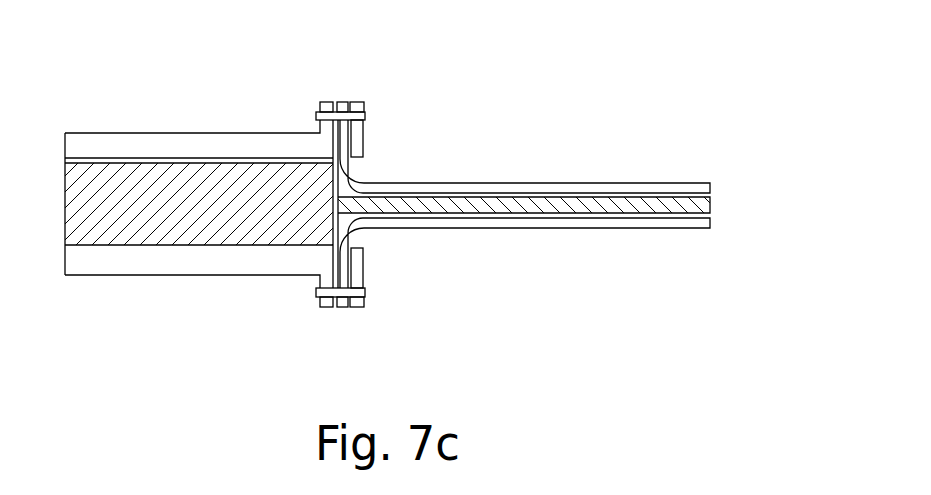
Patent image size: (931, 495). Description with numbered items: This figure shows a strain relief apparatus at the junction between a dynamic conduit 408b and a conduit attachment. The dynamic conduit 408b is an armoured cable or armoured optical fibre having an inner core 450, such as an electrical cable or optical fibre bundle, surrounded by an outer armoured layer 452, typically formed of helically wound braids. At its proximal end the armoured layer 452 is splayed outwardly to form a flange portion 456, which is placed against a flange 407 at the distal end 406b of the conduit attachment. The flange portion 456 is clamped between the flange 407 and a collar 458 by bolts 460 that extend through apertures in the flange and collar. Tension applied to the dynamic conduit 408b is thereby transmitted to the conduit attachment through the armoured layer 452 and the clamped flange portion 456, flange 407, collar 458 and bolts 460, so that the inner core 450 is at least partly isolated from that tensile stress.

The distal end of conduit attachment 406b is at (223, 276).
The flange 407 is at (328, 308).
The dynamic conduit 408b is at (573, 201).
The inner core 450 is at (712, 207).
The armoured layer 452 is at (560, 229).
The flange portion 456 is at (342, 308).
The collar 458 is at (363, 268).
The bolts 460 is at (367, 117).